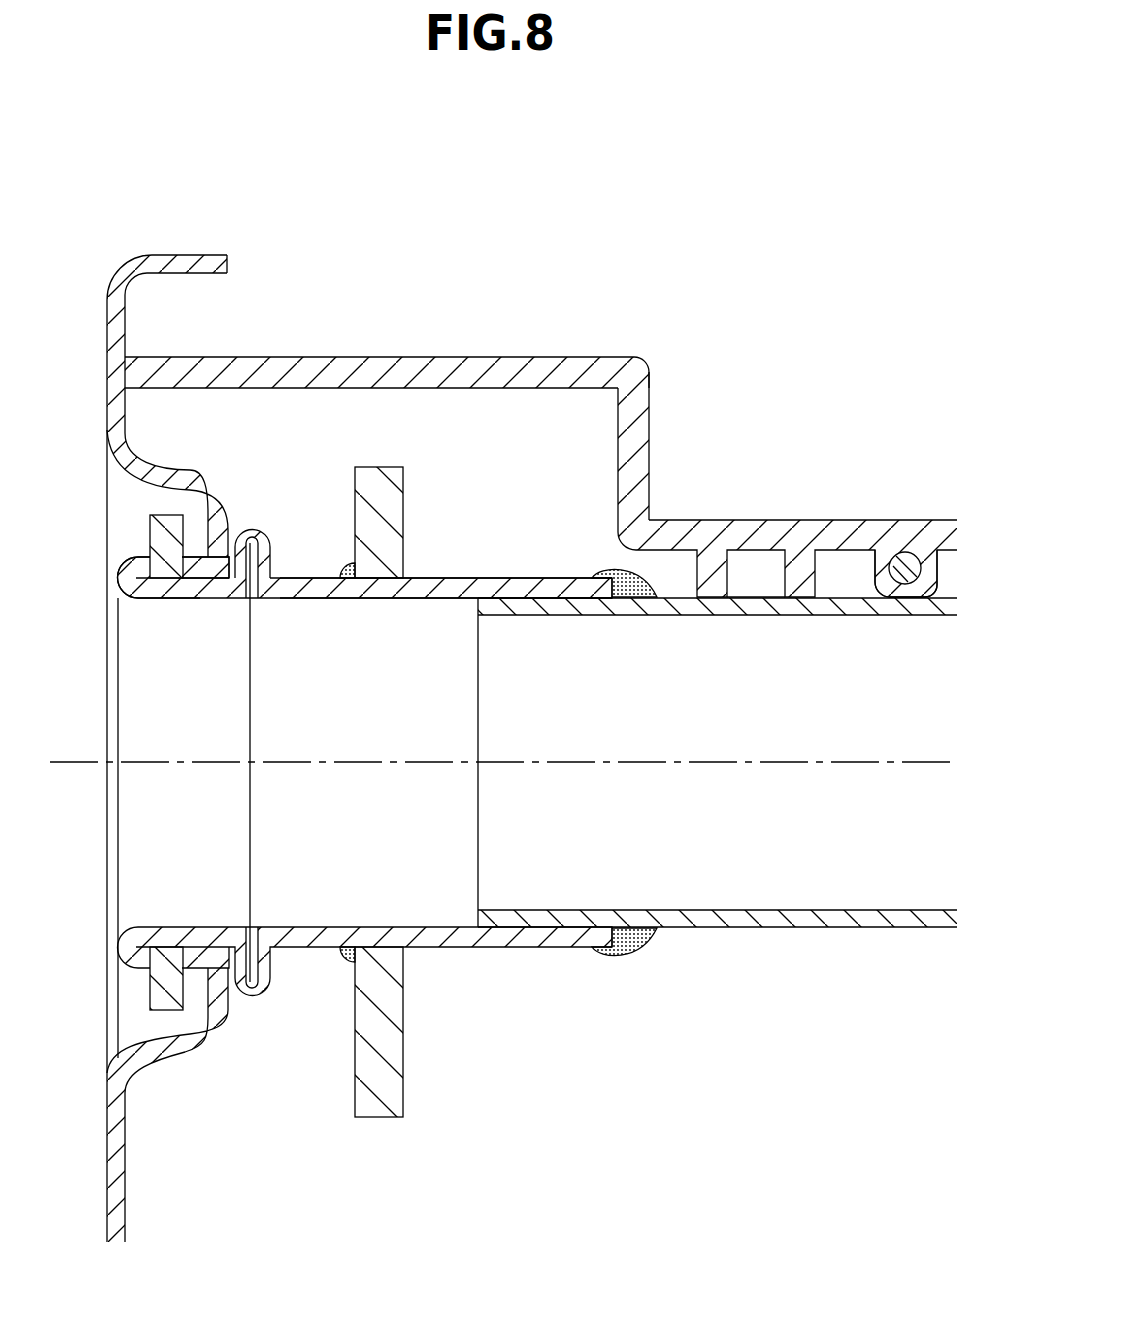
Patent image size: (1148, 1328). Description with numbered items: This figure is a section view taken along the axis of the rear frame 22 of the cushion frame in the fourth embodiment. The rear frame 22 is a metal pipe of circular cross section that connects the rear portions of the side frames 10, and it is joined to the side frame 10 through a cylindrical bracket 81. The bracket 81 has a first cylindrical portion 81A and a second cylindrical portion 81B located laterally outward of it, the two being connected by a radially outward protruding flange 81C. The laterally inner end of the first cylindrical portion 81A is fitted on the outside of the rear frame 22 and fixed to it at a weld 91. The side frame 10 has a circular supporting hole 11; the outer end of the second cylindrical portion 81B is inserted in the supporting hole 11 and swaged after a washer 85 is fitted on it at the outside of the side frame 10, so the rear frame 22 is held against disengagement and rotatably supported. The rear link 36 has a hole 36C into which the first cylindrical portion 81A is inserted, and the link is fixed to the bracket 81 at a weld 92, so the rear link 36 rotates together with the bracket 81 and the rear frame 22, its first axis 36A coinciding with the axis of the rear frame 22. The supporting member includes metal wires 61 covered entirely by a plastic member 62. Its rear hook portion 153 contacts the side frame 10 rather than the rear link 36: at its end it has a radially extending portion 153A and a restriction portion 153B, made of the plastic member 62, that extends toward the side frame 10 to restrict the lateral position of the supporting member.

The side frame 10 is at (189, 255).
The supporting hole 11 is at (202, 576).
The rear frame 22 is at (752, 594).
The rear link 36 is at (403, 1061).
The first axis 36A is at (675, 760).
The hole 36C is at (377, 929).
The metal wire 61 is at (903, 561).
The plastic member 62 is at (910, 602).
The bracket 81 is at (301, 576).
The first cylindrical portion 81A is at (475, 589).
The second cylindrical portion 81B is at (170, 592).
The flange 81C is at (249, 527).
The washer 85 is at (158, 535).
The weld 91 is at (640, 952).
The weld 92 is at (342, 962).
The rear hook portion 153 is at (700, 519).
The radially extending portion 153A is at (640, 419).
The restriction portion 153B is at (412, 355).